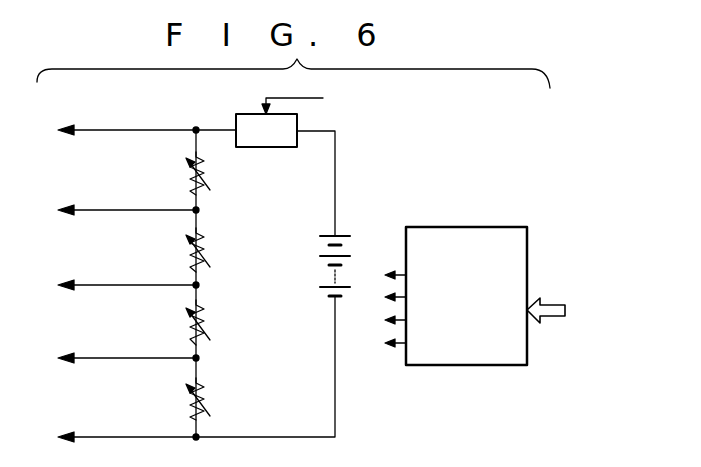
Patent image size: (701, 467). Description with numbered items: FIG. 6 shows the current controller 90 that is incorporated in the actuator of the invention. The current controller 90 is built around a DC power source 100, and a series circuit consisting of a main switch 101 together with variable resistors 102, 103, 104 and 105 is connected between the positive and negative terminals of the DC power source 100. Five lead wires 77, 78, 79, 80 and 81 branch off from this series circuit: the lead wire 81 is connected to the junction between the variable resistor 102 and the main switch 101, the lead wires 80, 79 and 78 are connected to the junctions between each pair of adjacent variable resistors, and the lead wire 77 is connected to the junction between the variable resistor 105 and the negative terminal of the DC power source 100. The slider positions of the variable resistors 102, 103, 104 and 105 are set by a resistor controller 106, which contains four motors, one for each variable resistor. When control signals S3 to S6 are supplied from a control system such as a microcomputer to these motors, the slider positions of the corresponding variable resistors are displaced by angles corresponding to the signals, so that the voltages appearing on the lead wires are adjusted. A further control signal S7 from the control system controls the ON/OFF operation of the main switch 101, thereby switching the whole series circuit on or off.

The lead wire 77 is at (76, 430).
The lead wire 78 is at (76, 350).
The lead wire 79 is at (76, 281).
The lead wire 80 is at (74, 204).
The lead wire 81 is at (90, 128).
The current controller 90 is at (356, 197).
The DC power source 100 is at (318, 268).
The main switch 101 is at (278, 150).
The variable resistor 102 is at (183, 172).
The variable resistor 103 is at (183, 250).
The variable resistor 104 is at (183, 312).
The variable resistor 105 is at (183, 392).
The resistor controller 106 is at (476, 227).
The control signal S7 is at (296, 94).
The control signal S3 is at (582, 304).